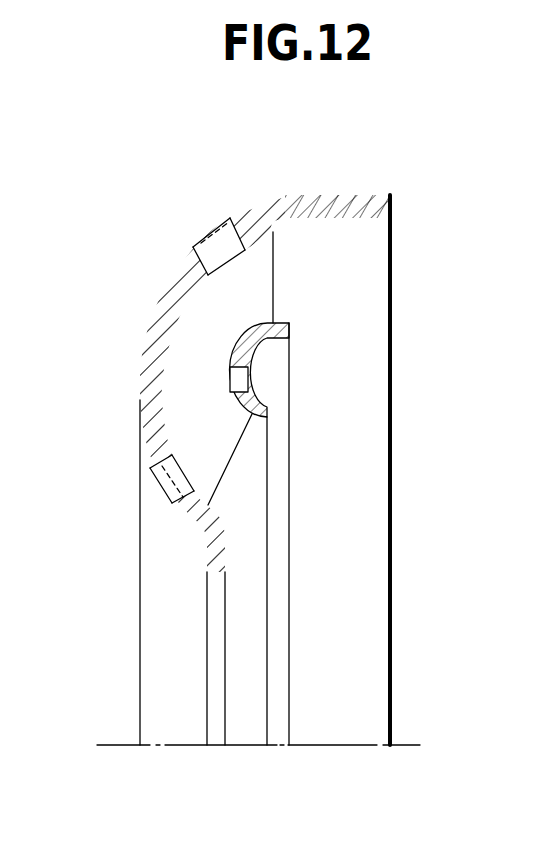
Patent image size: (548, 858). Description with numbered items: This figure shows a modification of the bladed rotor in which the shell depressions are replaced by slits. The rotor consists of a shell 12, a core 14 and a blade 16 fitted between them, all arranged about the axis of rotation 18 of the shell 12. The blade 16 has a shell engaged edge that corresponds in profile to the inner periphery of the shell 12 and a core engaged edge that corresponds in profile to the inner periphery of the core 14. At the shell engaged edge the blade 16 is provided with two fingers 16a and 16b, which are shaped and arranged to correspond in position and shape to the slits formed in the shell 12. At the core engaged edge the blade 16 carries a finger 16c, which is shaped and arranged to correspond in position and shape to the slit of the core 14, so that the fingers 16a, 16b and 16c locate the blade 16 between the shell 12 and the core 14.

The shell 12 is at (324, 197).
The core 14 is at (290, 322).
The blade 16 is at (252, 280).
The finger 16a is at (217, 246).
The finger 16b is at (170, 472).
The finger 16c is at (240, 379).
The axis of rotation 18 is at (408, 745).